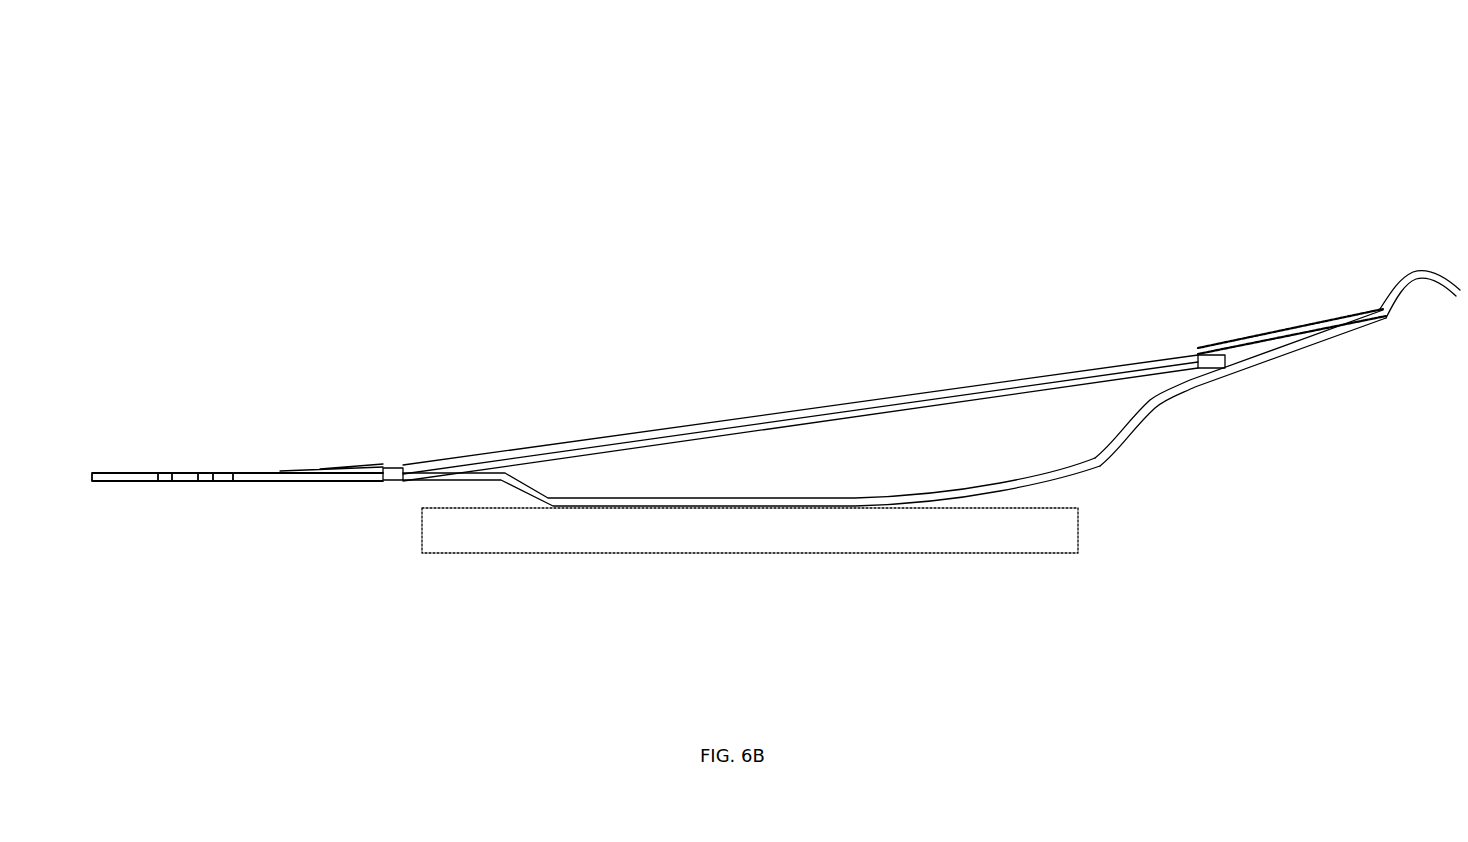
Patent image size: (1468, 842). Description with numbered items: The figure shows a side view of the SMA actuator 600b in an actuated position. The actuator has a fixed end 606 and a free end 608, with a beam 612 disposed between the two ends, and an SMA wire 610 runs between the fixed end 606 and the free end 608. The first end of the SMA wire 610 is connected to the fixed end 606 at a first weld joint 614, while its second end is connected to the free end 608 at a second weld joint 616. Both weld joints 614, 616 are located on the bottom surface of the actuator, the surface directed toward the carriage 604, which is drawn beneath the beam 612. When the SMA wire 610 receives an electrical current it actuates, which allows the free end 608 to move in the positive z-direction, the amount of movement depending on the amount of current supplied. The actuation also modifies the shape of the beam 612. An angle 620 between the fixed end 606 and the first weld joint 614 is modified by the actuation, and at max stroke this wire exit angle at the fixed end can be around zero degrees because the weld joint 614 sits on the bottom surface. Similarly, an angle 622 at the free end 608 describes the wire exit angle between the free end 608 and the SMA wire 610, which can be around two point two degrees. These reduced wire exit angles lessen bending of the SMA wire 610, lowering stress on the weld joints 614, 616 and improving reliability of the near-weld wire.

The SMA actuator 600b is at (1188, 95).
The carriage 604 is at (1048, 558).
The fixed end 606 is at (233, 468).
The free end 608 is at (1383, 243).
The SMA wire 610 is at (758, 397).
The beam 612 is at (1125, 450).
The first weld joint 614 is at (395, 487).
The second weld joint 616 is at (1222, 387).
The angle 620 is at (422, 448).
The angle 622 is at (1173, 382).